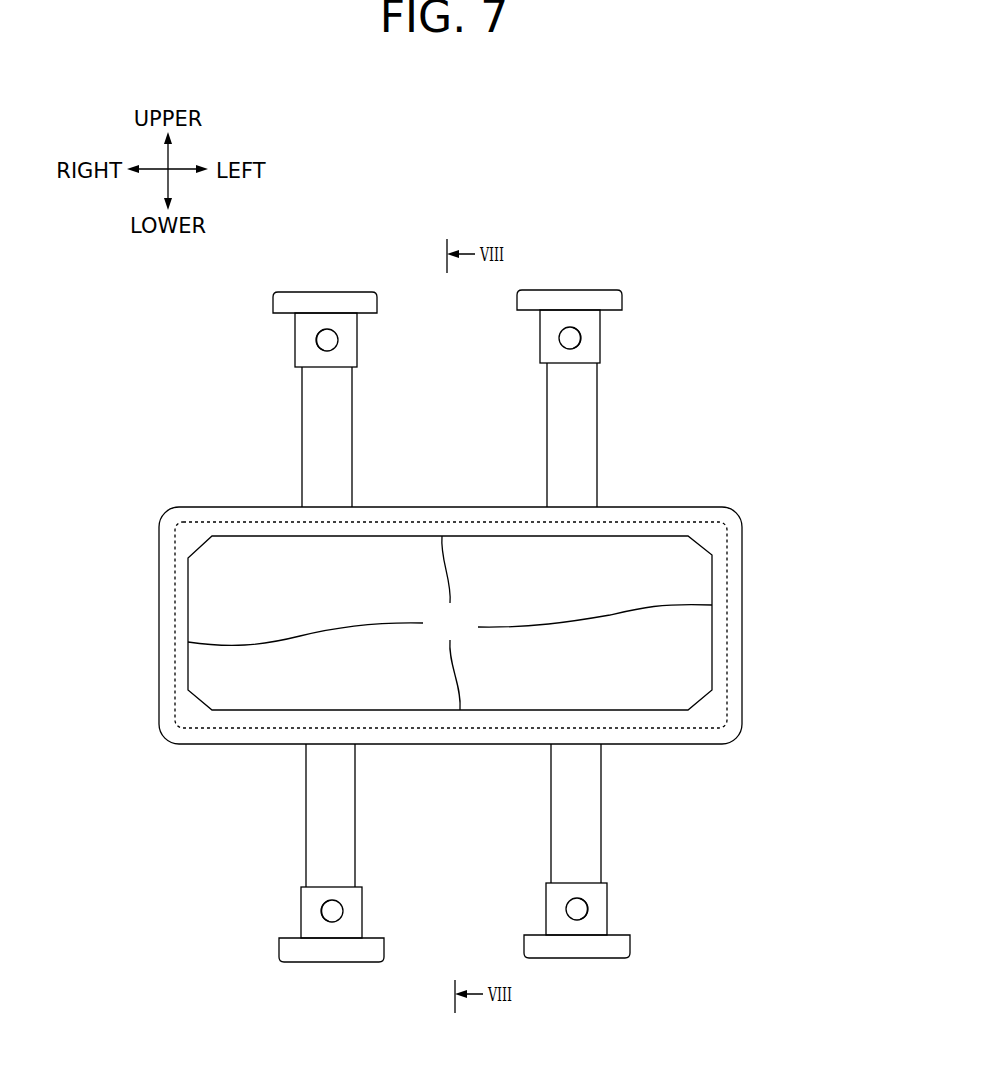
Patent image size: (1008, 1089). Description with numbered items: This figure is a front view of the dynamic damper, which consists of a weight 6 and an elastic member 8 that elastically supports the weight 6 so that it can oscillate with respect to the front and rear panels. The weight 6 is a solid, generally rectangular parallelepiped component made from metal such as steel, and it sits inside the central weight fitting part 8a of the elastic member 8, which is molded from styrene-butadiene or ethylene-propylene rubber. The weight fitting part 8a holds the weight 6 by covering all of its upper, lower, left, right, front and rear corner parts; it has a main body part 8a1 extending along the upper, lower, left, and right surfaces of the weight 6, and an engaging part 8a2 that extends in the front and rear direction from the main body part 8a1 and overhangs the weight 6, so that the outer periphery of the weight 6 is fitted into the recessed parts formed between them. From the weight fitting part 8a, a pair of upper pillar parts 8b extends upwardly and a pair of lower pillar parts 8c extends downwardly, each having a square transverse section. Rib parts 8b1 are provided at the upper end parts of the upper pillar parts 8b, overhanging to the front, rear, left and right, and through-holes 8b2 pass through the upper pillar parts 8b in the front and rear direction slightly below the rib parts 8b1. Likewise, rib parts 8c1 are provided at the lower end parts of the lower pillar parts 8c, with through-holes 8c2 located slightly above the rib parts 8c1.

The weight 6 is at (225, 600).
The elastic member 8 is at (745, 468).
The weight fitting part 8a is at (742, 580).
The main body part 8a1 is at (417, 510).
The engaging part 8a2 is at (450, 623).
The upper pillar parts 8b is at (302, 433).
The rib parts 8b1 is at (273, 303).
The through-holes 8b2 is at (317, 352).
The lower pillar parts 8c is at (306, 817).
The rib parts 8c1 is at (278, 948).
The through-holes 8c2 is at (325, 913).